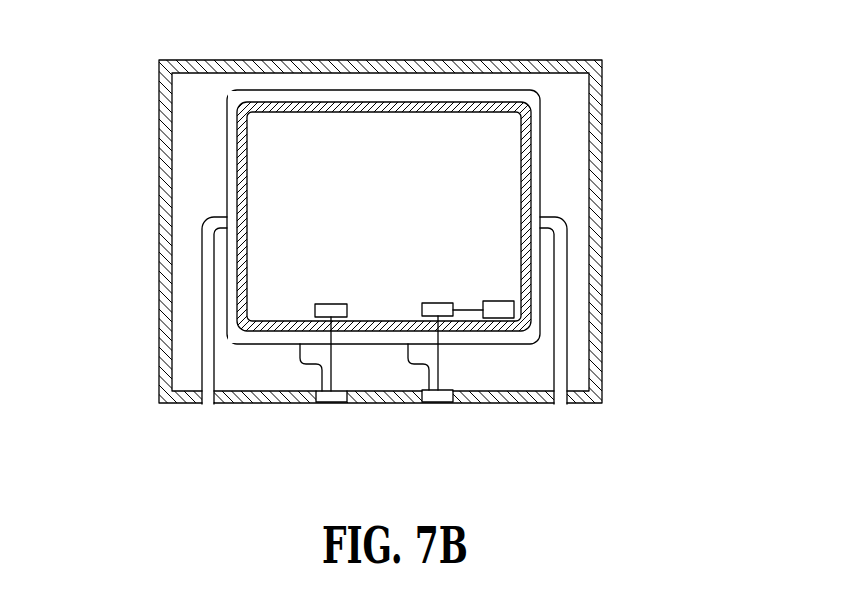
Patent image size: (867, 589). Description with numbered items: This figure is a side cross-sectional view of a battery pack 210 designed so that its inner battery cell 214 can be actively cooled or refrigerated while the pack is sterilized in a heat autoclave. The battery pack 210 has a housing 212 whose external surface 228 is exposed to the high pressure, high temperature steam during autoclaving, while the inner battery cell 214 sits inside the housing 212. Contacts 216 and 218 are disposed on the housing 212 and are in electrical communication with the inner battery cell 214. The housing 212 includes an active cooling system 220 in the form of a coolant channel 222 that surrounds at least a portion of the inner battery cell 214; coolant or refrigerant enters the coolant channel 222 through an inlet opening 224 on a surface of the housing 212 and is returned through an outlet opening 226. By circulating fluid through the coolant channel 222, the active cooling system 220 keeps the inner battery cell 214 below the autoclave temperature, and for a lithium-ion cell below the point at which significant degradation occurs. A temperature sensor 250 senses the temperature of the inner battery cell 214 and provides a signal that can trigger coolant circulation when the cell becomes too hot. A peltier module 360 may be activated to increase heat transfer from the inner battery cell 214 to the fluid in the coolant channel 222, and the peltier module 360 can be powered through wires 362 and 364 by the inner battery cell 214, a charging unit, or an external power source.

The battery pack 210 is at (216, 48).
The housing 212 is at (573, 60).
The external surface 228 is at (159, 108).
The active cooling system 220 is at (535, 195).
The coolant channel 222 is at (535, 263).
The inner battery cell 214 is at (508, 164).
The peltier module 360 is at (237, 178).
The outlet opening 226 is at (208, 409).
The inlet opening 224 is at (561, 409).
The contact 218 is at (330, 409).
The contact 216 is at (439, 409).
The temperature sensor 250 is at (514, 312).
The wire 362 is at (300, 355).
The wire 364 is at (403, 355).